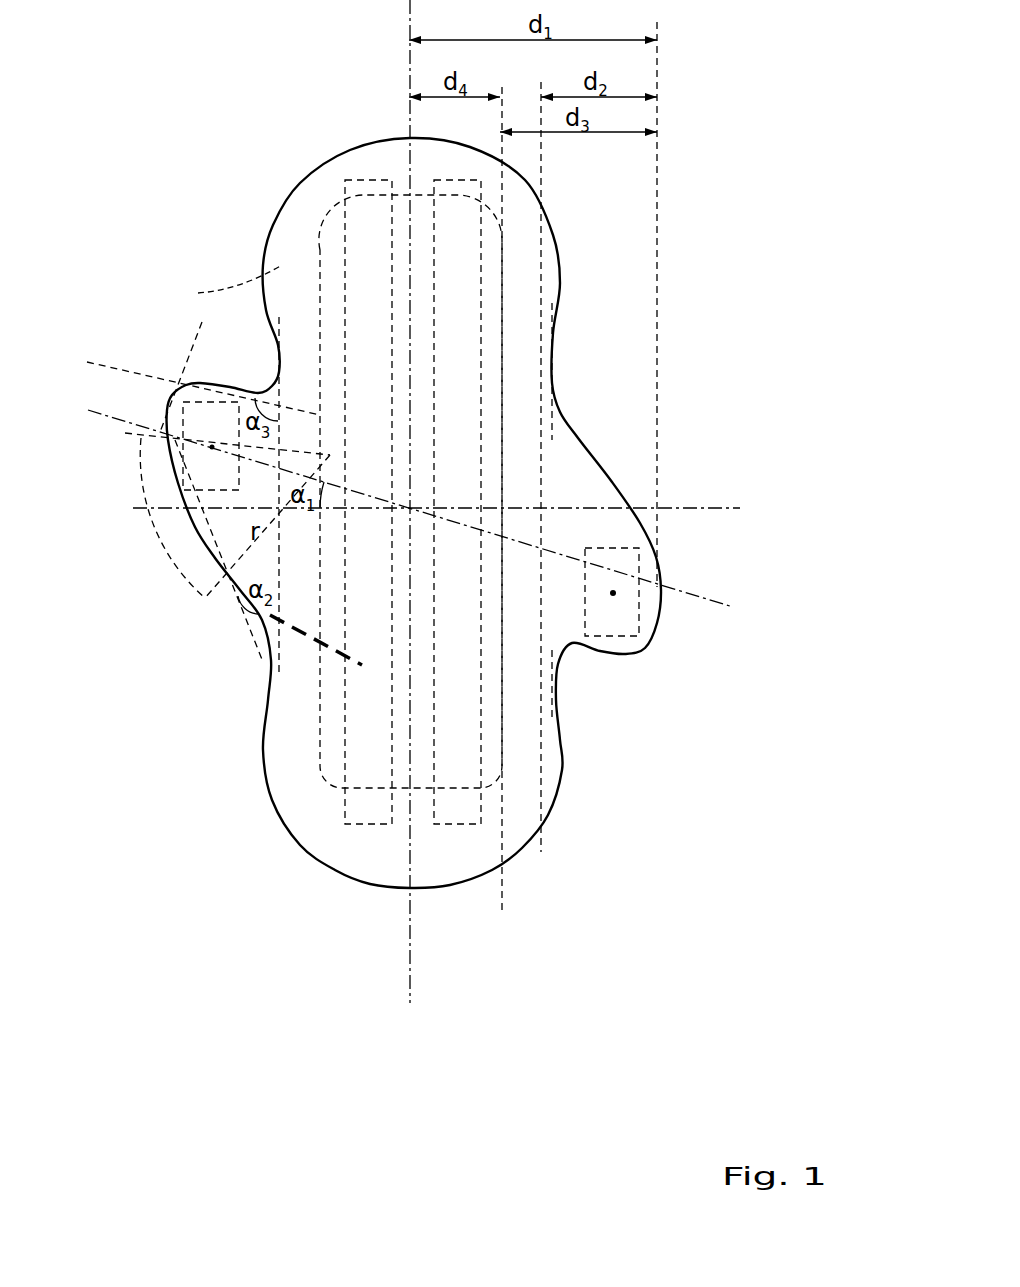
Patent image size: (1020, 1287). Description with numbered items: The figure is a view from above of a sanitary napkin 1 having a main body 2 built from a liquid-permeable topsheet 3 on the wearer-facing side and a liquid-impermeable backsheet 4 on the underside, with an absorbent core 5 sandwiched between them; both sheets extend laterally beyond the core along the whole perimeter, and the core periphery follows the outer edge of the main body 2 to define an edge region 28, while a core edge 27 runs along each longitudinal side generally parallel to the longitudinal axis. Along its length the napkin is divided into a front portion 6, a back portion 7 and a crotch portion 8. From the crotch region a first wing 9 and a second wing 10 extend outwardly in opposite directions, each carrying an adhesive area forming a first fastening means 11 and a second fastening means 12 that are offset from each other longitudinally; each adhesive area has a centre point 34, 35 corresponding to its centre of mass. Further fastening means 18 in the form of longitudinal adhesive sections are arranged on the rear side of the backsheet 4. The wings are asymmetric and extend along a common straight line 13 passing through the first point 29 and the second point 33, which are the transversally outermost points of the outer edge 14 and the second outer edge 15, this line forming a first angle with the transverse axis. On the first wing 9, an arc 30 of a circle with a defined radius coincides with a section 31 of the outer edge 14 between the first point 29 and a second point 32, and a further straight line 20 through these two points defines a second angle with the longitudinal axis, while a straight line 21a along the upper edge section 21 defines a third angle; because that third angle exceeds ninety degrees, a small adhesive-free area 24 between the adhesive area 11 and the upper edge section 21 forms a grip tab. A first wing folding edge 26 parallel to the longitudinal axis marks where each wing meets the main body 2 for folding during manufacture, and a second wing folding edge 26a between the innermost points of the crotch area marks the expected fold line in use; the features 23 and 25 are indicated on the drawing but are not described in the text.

The sanitary napkin 1 is at (273, 190).
The main body 2 is at (553, 267).
The liquid-permeable topsheet 3 is at (285, 243).
The liquid-impermeable backsheet 4 is at (229, 286).
The absorbent core 5 is at (332, 218).
The front portion 6 is at (200, 218).
The back portion 7 is at (167, 685).
The crotch portion 8 is at (130, 542).
The first wing 9 is at (195, 537).
The second wing 10 is at (615, 492).
The first fastening means 11 is at (208, 408).
The second fastening means 12 is at (605, 625).
The common straight line 13 is at (717, 600).
The outer edge 14 is at (168, 415).
The second outer edge 15 is at (660, 625).
The further fastening means 18 is at (453, 810).
The further straight line 20 is at (257, 647).
The upper edge section 21 is at (232, 388).
The straight line 21a is at (120, 362).
The wing rear edge 23 is at (620, 653).
The area 24 is at (197, 395).
The wing rear corner 25 is at (642, 653).
The first wing folding edge 26 is at (542, 423).
The second wing folding edge 26a is at (552, 438).
The core edge 27 is at (503, 355).
The edge region 28 is at (552, 778).
The first point 29 is at (168, 433).
The arc 30 is at (202, 323).
The section 31 is at (188, 580).
The second point 32 is at (227, 583).
The second point 33 is at (657, 587).
The centre point 34 is at (212, 447).
The centre point 35 is at (613, 593).